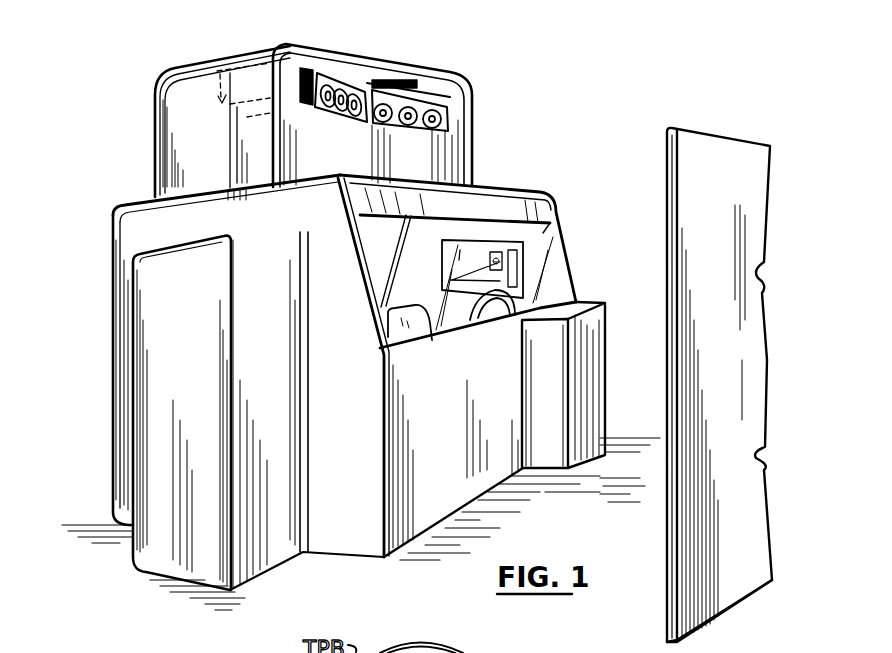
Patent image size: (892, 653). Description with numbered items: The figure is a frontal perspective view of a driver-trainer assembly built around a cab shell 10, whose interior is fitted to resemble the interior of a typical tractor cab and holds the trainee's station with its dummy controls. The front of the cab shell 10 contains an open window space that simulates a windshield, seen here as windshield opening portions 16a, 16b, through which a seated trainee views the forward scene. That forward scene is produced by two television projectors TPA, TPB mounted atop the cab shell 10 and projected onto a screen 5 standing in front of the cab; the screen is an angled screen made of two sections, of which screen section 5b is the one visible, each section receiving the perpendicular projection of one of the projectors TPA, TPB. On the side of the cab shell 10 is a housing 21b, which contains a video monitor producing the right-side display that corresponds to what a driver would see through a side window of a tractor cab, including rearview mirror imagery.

The cab shell 10 is at (492, 184).
The television projector TPB is at (330, 67).
The television projector TPA is at (428, 97).
The housing 21b is at (147, 272).
The windshield opening portion 16a is at (557, 232).
The windshield opening portion 16b is at (380, 267).
The screen 5 is at (724, 130).
The screen section 5b is at (677, 604).